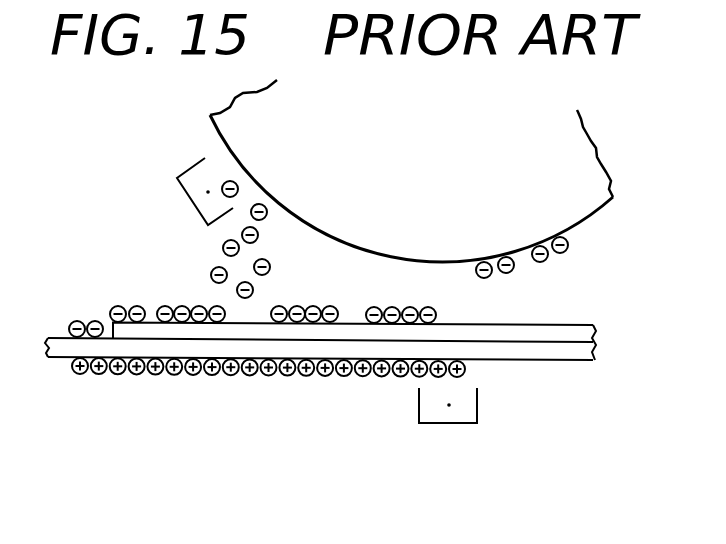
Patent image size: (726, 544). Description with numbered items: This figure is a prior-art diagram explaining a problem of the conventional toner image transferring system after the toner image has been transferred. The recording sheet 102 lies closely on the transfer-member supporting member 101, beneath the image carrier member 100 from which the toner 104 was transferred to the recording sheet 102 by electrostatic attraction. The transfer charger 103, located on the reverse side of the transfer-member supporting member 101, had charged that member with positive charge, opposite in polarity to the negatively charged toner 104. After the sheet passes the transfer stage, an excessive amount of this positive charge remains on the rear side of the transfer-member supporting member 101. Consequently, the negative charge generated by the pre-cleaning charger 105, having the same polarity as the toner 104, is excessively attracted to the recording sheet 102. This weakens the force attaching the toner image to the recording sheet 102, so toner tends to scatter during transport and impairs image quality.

The image carrier member 100 is at (425, 171).
The transfer-member supporting member 101 is at (329, 362).
The recording sheet 102 is at (361, 315).
The transfer charger 103 is at (478, 405).
The toner 104 is at (304, 288).
The pre-cleaning charger 105 is at (178, 193).